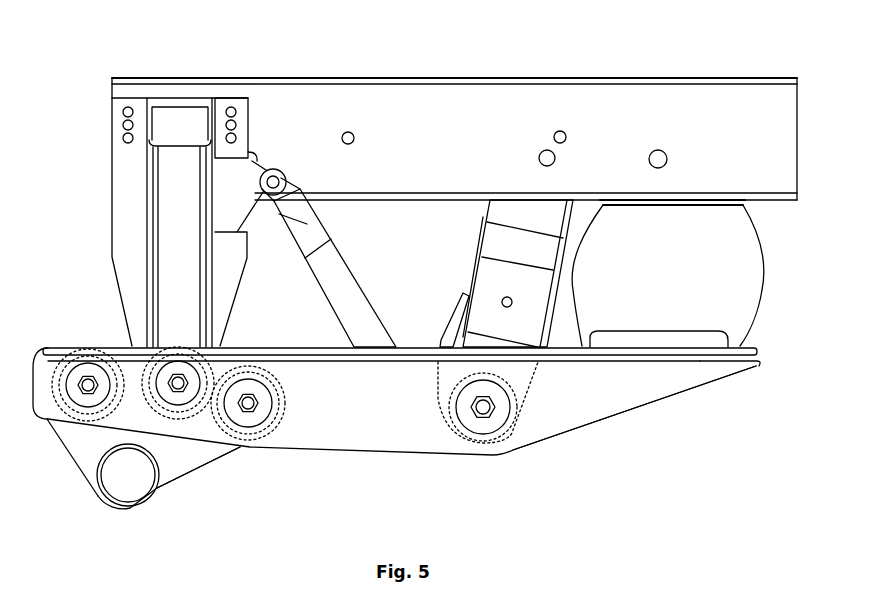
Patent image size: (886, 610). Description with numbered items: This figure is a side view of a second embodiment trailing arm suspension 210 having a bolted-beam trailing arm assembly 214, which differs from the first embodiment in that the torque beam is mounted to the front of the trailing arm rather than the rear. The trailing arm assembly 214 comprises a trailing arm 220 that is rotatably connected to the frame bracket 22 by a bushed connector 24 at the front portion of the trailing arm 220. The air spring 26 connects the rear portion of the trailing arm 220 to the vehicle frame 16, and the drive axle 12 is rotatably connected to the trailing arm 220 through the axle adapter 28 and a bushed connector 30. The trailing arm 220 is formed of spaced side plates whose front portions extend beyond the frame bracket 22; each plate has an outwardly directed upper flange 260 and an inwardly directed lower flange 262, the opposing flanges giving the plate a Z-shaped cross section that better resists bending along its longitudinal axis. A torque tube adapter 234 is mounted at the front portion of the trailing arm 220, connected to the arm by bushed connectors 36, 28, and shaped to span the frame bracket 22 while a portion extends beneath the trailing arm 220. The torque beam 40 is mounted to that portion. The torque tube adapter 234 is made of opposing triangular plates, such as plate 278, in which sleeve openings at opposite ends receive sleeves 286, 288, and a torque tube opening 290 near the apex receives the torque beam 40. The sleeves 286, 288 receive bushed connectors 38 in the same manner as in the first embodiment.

The trailing arm suspension 210 is at (258, 31).
The frame bracket 22 is at (111, 131).
The vehicle frame 16 is at (718, 92).
The drive axle 12 is at (492, 273).
The axle adapter 28 is at (450, 327).
The air spring 26 is at (752, 252).
The sleeve 288 is at (290, 347).
The upper flange 260 is at (697, 357).
The trailing arm 220 is at (291, 458).
The torque tube adapter 234 is at (82, 467).
The torque beam 40 is at (100, 497).
The torque tube opening 290 is at (128, 508).
The plate 278 is at (210, 463).
The sleeve 286 is at (66, 345).
The bushed connector 36 is at (88, 374).
The bushed connector 24 is at (178, 392).
The bushed connector 38 is at (252, 392).
The bushed connector 30 is at (503, 425).
The lower flange 262 is at (582, 430).
The trailing arm assembly 214 is at (643, 412).